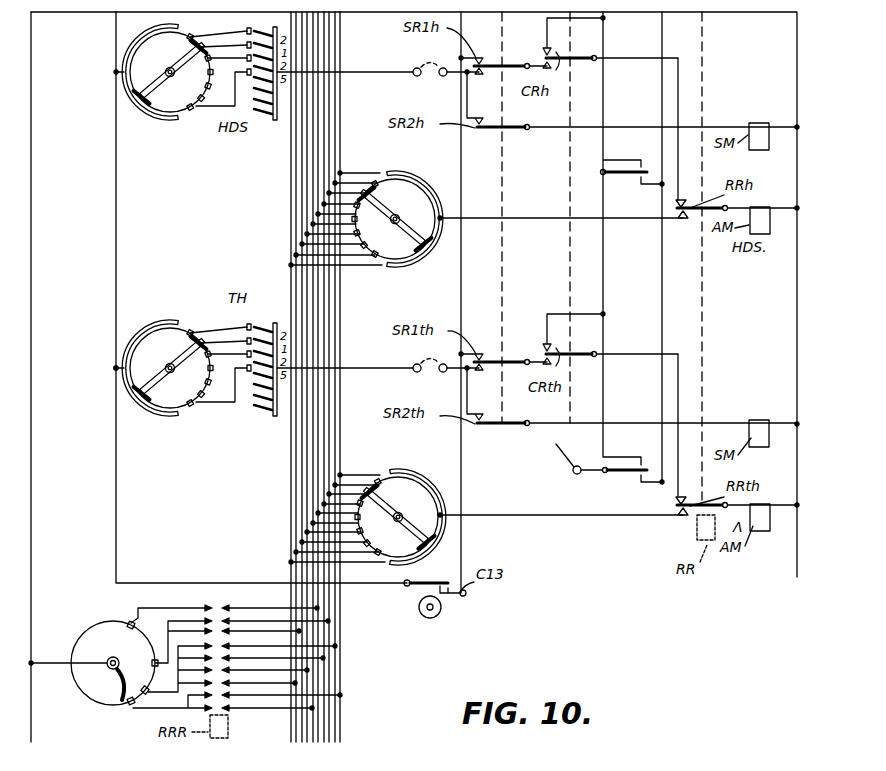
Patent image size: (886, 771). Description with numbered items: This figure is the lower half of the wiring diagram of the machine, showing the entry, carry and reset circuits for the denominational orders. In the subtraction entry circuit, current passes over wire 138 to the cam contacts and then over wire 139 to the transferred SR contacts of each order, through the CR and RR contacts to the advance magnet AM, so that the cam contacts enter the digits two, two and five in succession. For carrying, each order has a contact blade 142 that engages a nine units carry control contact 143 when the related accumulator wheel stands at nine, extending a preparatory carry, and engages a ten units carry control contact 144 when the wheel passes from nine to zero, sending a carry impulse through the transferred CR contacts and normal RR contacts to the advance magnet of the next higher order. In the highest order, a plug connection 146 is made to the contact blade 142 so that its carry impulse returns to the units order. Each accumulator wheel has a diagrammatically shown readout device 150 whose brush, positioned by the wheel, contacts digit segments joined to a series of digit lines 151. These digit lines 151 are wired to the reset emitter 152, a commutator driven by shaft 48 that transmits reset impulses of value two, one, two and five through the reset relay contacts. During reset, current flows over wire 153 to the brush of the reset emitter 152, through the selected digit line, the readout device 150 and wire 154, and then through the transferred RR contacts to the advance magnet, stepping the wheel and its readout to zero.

The wire 138 is at (116, 278).
The wire 139 is at (462, 543).
The contact blade 142 is at (620, 174).
The "9" units carry control contact 143 is at (630, 155).
The "10" units carry control contact 144 is at (652, 186).
The plug connection 146 is at (555, 452).
The readout device 150 is at (406, 267).
The digit lines 151 is at (297, 445).
The reset emitter 152 is at (82, 636).
The wire 153 is at (31, 533).
The wire 154 is at (567, 516).
The shaft 48 is at (112, 658).